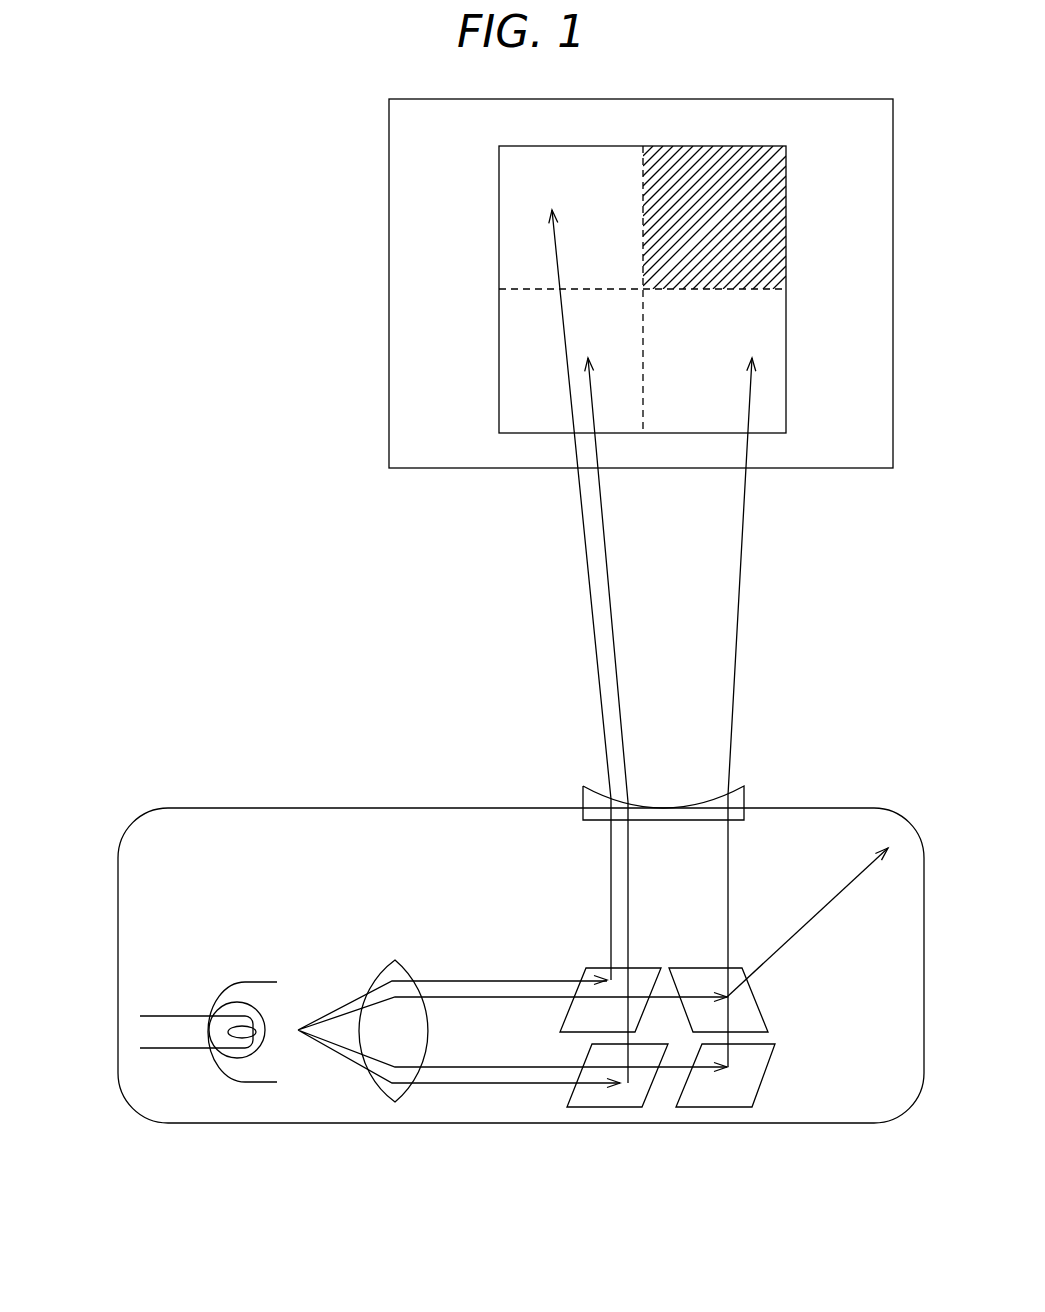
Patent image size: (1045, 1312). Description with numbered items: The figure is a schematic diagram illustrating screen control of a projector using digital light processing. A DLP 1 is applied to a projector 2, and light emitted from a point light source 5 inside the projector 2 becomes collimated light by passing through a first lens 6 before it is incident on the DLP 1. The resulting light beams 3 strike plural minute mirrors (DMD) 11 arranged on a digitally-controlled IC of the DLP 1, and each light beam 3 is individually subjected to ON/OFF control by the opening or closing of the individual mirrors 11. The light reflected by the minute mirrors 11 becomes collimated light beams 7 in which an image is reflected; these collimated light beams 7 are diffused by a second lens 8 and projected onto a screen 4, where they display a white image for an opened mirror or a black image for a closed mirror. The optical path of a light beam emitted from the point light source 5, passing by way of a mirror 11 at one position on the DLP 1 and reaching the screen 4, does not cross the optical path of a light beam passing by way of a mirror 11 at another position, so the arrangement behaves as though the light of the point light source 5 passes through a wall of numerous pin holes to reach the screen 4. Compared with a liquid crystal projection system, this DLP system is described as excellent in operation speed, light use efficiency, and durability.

The DLP 1 is at (521, 963).
The projector 2 is at (252, 808).
The light beam 3 is at (499, 978).
The screen 4 is at (400, 190).
The point light source 5 is at (299, 993).
The first lens 6 is at (405, 962).
The collimated light beams 7 is at (730, 857).
The second lens 8 is at (740, 797).
The minute mirrors (DMD) 11 is at (644, 972).